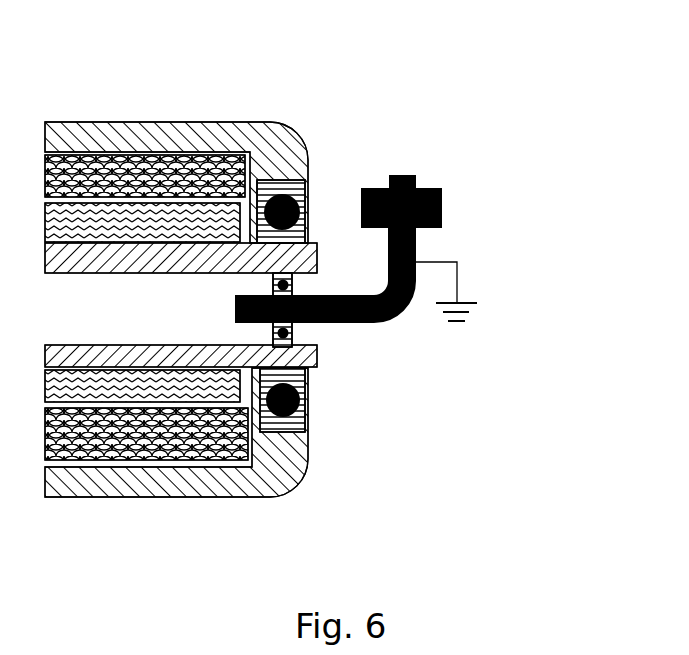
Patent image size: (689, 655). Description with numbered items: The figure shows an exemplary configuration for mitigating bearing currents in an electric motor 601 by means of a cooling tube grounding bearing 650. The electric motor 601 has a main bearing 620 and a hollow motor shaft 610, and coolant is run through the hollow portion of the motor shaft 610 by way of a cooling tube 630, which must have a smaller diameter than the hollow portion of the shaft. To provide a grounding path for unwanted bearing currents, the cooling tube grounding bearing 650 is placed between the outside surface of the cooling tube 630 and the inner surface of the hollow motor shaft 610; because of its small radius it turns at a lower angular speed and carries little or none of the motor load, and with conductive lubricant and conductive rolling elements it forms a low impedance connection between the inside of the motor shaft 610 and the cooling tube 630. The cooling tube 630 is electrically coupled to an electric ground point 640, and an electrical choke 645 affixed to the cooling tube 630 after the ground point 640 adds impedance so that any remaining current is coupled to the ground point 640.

The electric motor 601 is at (148, 112).
The motor shaft 610 is at (323, 372).
The main bearing 620 is at (316, 186).
The cooling tube 630 is at (424, 166).
The electric ground point 640 is at (480, 279).
The electrical choke 645 is at (460, 205).
The cooling tube grounding bearing 650 is at (310, 335).